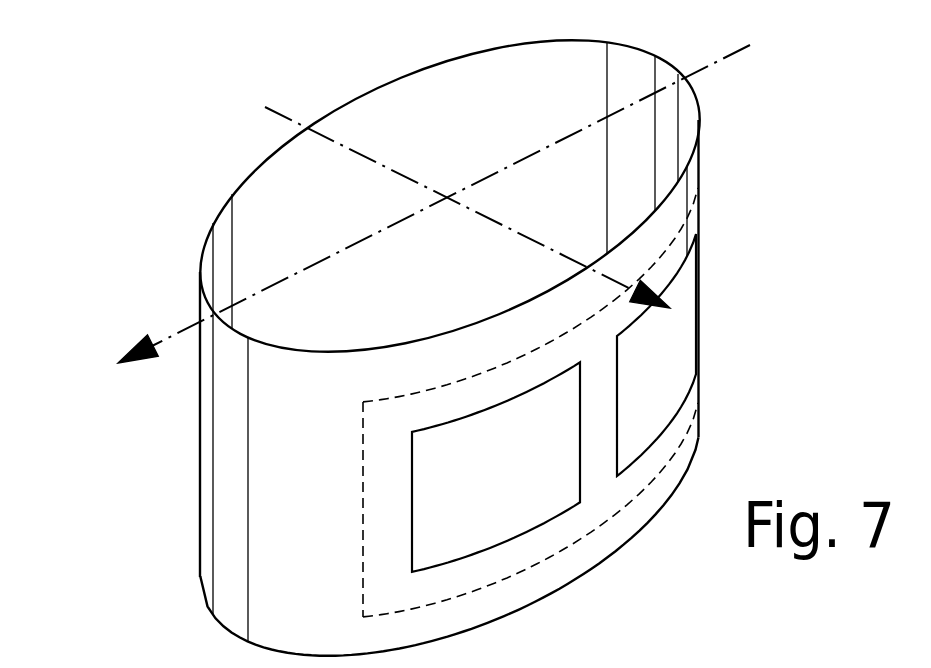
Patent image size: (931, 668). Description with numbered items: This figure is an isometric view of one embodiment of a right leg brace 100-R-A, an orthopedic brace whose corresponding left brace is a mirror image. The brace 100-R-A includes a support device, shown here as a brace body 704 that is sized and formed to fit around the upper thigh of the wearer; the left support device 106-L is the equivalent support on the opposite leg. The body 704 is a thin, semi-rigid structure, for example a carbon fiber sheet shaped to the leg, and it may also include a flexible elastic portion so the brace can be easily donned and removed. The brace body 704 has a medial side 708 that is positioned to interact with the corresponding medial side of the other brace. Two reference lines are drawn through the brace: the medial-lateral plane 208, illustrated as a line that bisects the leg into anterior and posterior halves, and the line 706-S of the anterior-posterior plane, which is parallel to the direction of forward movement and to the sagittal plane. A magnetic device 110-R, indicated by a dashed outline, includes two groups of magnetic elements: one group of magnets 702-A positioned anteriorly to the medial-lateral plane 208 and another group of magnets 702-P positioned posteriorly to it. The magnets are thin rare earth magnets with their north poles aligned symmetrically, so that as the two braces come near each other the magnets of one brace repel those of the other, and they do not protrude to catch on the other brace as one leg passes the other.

The right leg brace 100-R-A is at (200, 490).
The brace body 704 is at (358, 97).
The left support device 106-L is at (244, 181).
The medial side 708 is at (609, 553).
The medial-lateral plane 208 is at (360, 157).
The line of the anterior-posterior plane 706-S is at (723, 63).
The magnetic device 110-R is at (363, 441).
The anterior group of magnets 702-A is at (411, 530).
The posterior group of magnets 702-P is at (699, 281).